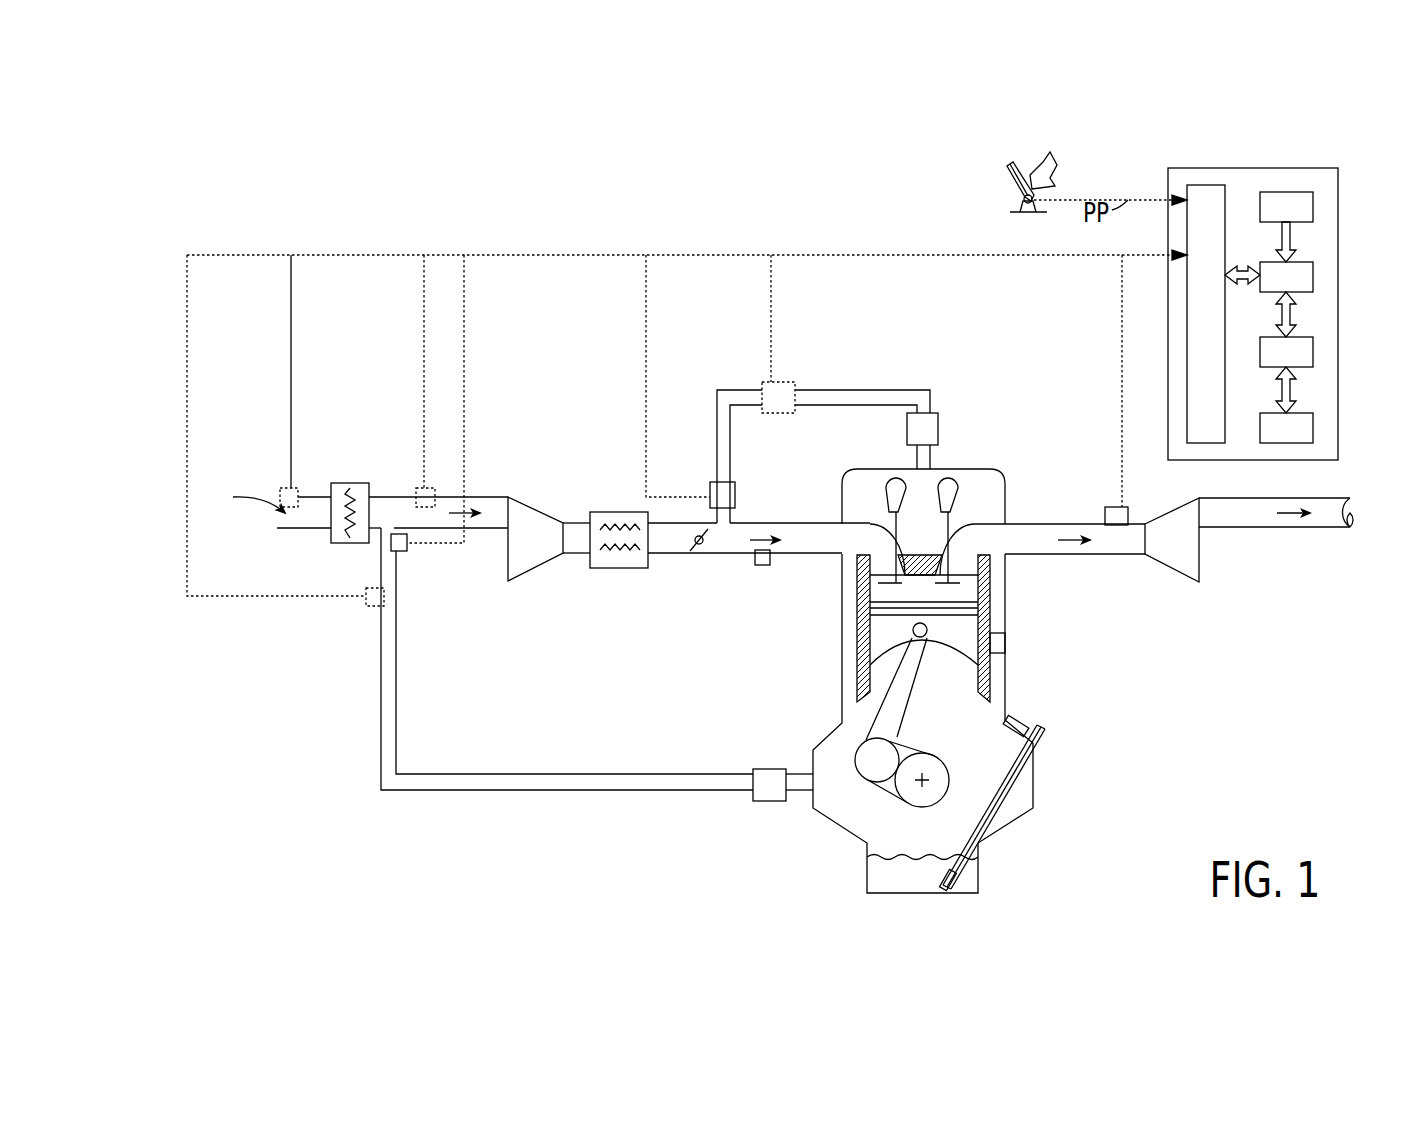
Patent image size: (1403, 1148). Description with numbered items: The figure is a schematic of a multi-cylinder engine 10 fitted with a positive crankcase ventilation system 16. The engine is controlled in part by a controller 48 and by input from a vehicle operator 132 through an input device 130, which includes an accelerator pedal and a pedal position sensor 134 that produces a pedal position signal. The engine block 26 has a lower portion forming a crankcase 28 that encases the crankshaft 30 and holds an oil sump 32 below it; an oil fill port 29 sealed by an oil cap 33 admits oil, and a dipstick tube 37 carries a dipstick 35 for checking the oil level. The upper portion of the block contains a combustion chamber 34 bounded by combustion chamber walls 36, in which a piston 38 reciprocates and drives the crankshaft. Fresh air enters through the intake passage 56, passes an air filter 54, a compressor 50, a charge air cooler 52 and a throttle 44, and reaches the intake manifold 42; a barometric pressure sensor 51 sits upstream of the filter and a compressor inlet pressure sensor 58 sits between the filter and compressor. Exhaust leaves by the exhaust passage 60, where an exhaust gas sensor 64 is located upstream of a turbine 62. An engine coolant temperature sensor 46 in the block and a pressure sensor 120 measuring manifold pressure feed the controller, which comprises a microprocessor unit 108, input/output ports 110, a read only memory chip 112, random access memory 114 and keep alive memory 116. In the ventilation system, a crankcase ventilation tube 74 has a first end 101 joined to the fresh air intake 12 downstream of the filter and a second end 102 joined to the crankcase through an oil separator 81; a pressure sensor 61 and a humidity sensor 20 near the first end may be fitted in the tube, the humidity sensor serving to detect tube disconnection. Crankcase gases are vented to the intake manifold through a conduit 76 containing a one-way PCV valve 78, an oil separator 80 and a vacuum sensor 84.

The engine 10 is at (414, 205).
The fresh air intake 12 is at (483, 565).
The positive crankcase ventilation system 16 is at (858, 378).
The humidity sensor 20 is at (433, 575).
The engine block 26 is at (1066, 826).
The crankcase 28 is at (1035, 806).
The oil fill port 29 is at (1010, 722).
The crankshaft 30 is at (877, 758).
The oil sump 32 is at (975, 880).
The oil cap 33 is at (1026, 722).
The combustion chamber 34 is at (928, 595).
The dipstick 35 is at (1042, 730).
The combustion chamber walls 36 is at (985, 607).
The dipstick tube 37 is at (1007, 772).
The piston 38 is at (882, 630).
The intake manifold 42 is at (820, 523).
The throttle 44 is at (718, 570).
The engine coolant temperature sensor 46 is at (993, 645).
The controller 48 is at (1288, 168).
The compressor 50 is at (535, 539).
The barometric pressure sensor 51 is at (283, 488).
The charge air cooler 52 is at (638, 512).
The air filter 54 is at (330, 490).
The intake passage 56 is at (243, 501).
The compressor inlet pressure sensor 58 is at (424, 488).
The exhaust passage 60 is at (1060, 523).
The pressure sensor 61 is at (416, 622).
The turbine 62 is at (1249, 540).
The exhaust gas sensor 64 is at (1130, 518).
The crankcase ventilation tube 74 is at (640, 790).
The conduit 76 is at (717, 390).
The PCV valve 78 is at (710, 485).
The oil separator 80 is at (940, 425).
The oil separator 81 is at (762, 802).
The vacuum sensor 84 is at (775, 382).
The first end 101 is at (376, 542).
The second end 102 is at (805, 767).
The microprocessor unit 108 is at (1315, 277).
The input/output ports 110 is at (1208, 195).
The read only memory chip 112 is at (1315, 206).
The random access memory 114 is at (1315, 352).
The keep alive memory 116 is at (1315, 432).
The pressure sensor 120 is at (788, 580).
The input device 130 is at (1008, 178).
The vehicle operator 132 is at (1055, 166).
The pedal position sensor 134 is at (1022, 199).